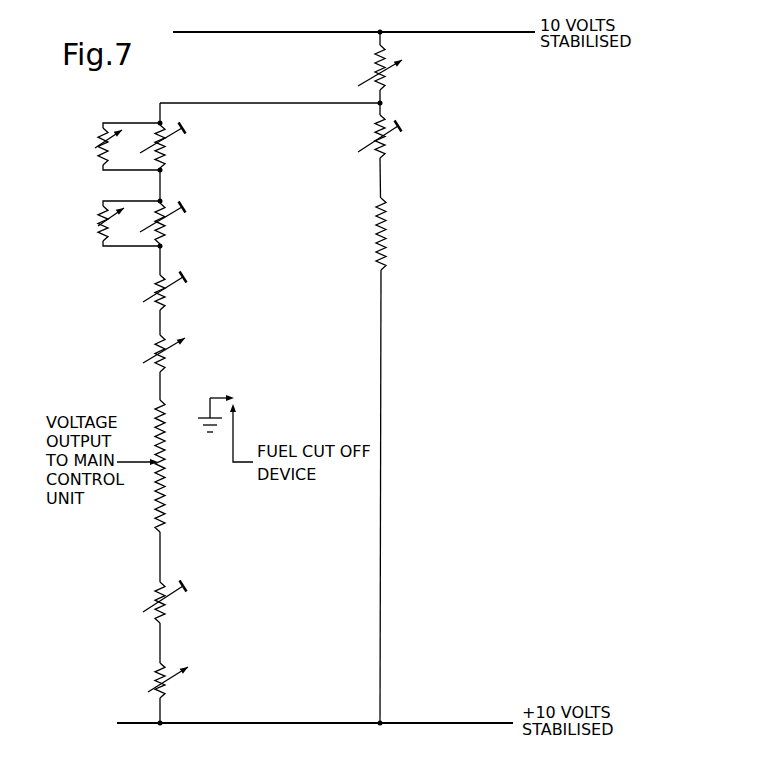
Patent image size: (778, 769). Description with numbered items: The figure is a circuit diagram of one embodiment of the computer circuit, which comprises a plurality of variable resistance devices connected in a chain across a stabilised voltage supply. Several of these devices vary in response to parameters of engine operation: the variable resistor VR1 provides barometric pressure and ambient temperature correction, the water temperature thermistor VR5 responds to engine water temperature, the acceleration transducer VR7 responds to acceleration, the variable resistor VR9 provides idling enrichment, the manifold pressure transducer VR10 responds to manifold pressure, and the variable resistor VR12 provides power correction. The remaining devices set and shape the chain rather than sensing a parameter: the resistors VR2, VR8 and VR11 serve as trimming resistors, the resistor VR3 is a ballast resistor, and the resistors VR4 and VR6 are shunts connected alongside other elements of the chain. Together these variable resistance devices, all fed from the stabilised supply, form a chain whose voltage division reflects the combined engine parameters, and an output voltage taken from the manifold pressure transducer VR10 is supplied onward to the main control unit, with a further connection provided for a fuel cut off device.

The barometric pressure and ambient temperature correction variable resistor VR1 is at (388, 67).
The trimming resistor VR2 is at (388, 136).
The ballast resistor VR3 is at (398, 234).
The shunt resistor VR4 is at (170, 146).
The water temperature thermistor VR5 is at (92, 146).
The shunt resistor VR6 is at (170, 223).
The acceleration transducer VR7 is at (96, 223).
The trimming resistor VR8 is at (170, 291).
The idling enrichment variable resistor VR9 is at (170, 353).
The manifold pressure transducer VR10 is at (182, 466).
The trimming resistor VR11 is at (175, 602).
The power correction variable resistor VR12 is at (178, 682).